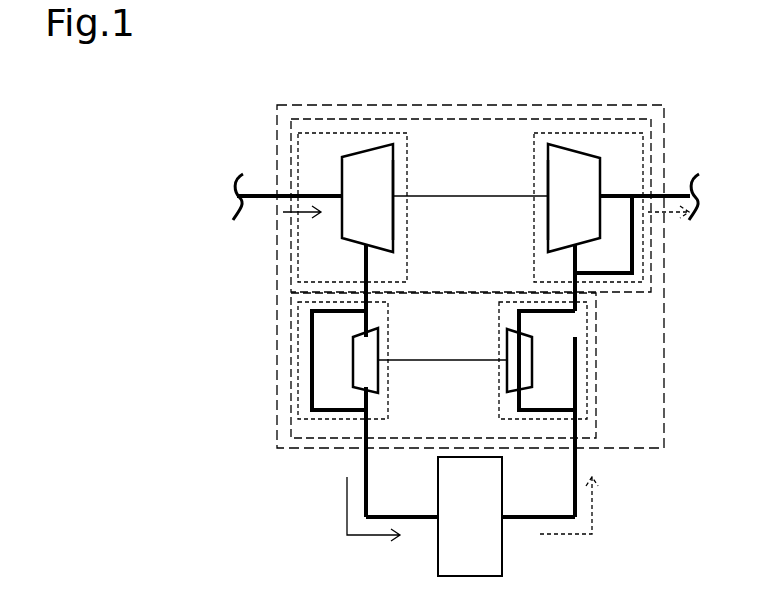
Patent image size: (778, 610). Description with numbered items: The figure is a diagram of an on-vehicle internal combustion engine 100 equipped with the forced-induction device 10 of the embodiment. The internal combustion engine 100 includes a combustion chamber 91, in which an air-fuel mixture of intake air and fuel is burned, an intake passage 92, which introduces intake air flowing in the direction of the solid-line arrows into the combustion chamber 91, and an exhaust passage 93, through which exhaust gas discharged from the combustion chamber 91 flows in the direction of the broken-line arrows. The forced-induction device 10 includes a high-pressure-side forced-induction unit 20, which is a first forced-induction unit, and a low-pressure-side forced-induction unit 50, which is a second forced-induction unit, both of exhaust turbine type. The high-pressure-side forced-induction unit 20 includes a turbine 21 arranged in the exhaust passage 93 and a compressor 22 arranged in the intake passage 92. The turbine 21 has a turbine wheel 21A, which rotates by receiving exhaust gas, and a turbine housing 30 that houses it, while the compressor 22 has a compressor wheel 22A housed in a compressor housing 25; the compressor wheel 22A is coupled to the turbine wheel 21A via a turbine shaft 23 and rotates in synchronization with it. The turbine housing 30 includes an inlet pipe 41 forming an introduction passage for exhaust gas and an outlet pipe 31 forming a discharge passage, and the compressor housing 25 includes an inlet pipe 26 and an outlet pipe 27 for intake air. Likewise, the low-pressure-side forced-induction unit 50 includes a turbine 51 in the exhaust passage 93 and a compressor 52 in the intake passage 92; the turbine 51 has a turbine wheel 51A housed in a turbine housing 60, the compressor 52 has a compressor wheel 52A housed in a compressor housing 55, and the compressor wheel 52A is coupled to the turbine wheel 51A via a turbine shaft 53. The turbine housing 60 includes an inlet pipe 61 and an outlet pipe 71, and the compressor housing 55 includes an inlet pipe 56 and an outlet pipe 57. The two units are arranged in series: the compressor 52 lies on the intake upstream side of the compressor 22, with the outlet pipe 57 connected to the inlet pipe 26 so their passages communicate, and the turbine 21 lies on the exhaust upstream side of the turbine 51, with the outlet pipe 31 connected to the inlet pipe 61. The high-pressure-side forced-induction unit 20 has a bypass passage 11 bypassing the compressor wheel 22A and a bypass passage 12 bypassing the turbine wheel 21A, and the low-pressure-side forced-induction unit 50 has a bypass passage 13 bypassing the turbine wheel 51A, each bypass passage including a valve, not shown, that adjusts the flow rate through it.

The forced-induction device 10 is at (664, 316).
The bypass passage 11 is at (312, 382).
The bypass passage 12 is at (577, 370).
The bypass passage 13 is at (634, 262).
The high-pressure-side forced-induction unit 20 is at (597, 422).
The turbine 21 is at (595, 311).
The turbine wheel 21A is at (507, 375).
The compressor 22 is at (291, 310).
The compressor wheel 22A is at (380, 375).
The turbine shaft 23 is at (442, 359).
The compressor housing 25 is at (297, 345).
The inlet pipe 26 is at (368, 312).
The outlet pipe 27 is at (368, 410).
The turbine housing 30 is at (589, 342).
The outlet pipe 31 is at (519, 318).
The inlet pipe 41 is at (521, 412).
The low-pressure-side forced-induction unit 50 is at (461, 118).
The turbine 51 is at (561, 132).
The turbine wheel 51A is at (547, 225).
The compressor 52 is at (341, 132).
The compressor wheel 52A is at (393, 212).
The turbine shaft 53 is at (464, 195).
The compressor housing 55 is at (396, 132).
The inlet pipe 56 is at (321, 195).
The outlet pipe 57 is at (368, 262).
The turbine housing 60 is at (615, 132).
The inlet pipe 61 is at (573, 262).
The outlet pipe 71 is at (621, 194).
The combustion chamber 91 is at (503, 555).
The intake passage 92 is at (257, 194).
The exhaust passage 93 is at (689, 194).
The internal combustion engine 100 is at (280, 480).